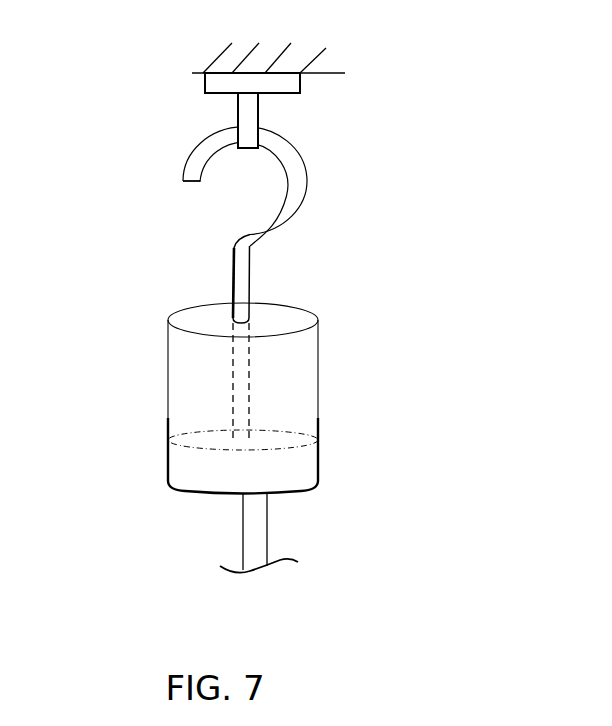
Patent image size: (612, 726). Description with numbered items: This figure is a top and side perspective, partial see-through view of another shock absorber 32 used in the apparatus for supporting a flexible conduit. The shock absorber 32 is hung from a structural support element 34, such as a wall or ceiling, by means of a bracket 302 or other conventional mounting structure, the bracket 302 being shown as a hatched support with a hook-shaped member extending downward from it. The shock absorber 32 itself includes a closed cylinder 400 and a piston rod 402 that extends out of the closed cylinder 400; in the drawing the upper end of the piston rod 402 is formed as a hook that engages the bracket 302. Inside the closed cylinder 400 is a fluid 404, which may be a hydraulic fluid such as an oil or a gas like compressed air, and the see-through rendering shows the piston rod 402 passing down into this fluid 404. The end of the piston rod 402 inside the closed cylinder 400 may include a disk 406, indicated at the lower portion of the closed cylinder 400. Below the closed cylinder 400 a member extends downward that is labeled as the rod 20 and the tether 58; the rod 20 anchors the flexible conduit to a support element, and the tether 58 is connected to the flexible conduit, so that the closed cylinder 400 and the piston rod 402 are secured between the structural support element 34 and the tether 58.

The structural support element 34 is at (357, 62).
The bracket 302 is at (206, 91).
The shock absorber 32 is at (349, 208).
The piston rod 402 is at (250, 270).
The closed cylinder 400 is at (346, 398).
The fluid 404 is at (270, 398).
The disk 406 is at (290, 465).
The rod 20 is at (341, 533).
The tether 58 is at (267, 532).